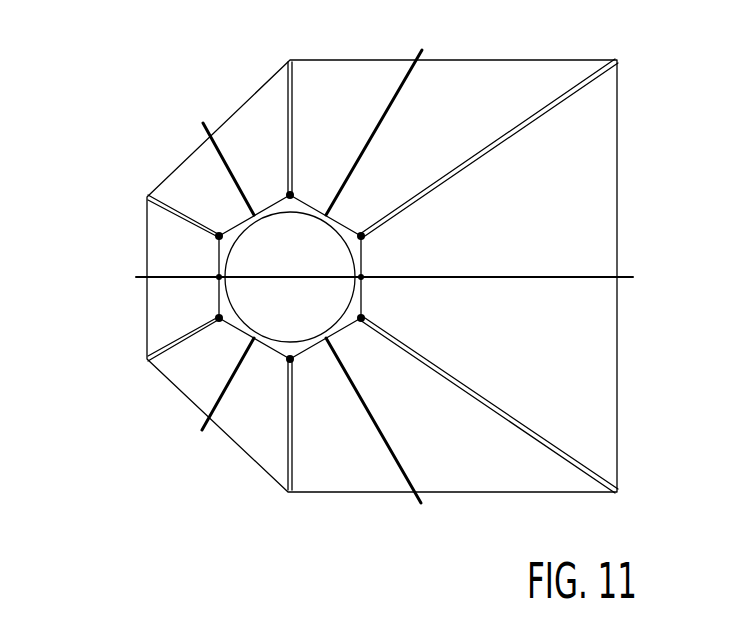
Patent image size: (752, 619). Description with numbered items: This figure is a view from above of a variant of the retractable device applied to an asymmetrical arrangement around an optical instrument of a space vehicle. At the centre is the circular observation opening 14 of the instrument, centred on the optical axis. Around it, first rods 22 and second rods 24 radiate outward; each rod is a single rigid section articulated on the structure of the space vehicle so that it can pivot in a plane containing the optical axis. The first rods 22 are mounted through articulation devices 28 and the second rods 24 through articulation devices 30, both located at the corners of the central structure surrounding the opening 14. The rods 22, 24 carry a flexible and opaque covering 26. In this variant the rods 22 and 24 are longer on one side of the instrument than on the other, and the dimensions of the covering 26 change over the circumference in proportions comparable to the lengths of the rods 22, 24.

The opening 14 is at (240, 312).
The first rods 22 is at (148, 197).
The second rods 24 is at (165, 279).
The flexible and opaque covering 26 is at (575, 342).
The articulation devices 28 is at (363, 313).
The articulation devices 30 is at (250, 212).